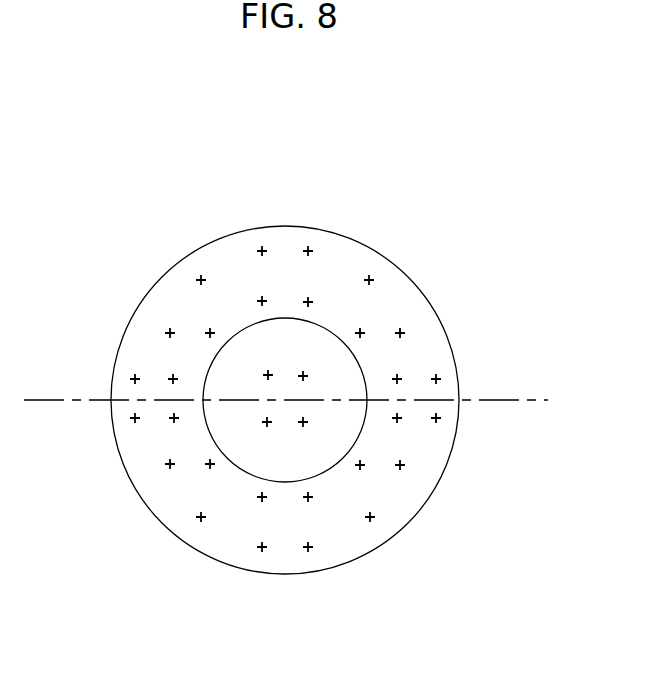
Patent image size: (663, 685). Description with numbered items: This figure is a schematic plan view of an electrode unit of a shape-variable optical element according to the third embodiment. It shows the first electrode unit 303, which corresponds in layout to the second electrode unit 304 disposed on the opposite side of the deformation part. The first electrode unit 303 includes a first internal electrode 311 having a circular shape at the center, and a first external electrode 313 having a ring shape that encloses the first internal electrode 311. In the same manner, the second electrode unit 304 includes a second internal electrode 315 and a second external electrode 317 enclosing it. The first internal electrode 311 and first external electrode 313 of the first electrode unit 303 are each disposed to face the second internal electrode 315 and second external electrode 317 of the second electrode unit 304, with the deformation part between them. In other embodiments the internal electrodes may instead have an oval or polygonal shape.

The first electrode unit 303 is at (286, 338).
The second electrode unit 304 is at (169, 212).
The first internal electrode 311 is at (330, 319).
The second internal electrode 315 is at (314, 342).
The first external electrode 313 is at (294, 446).
The second external electrode 317 is at (337, 527).